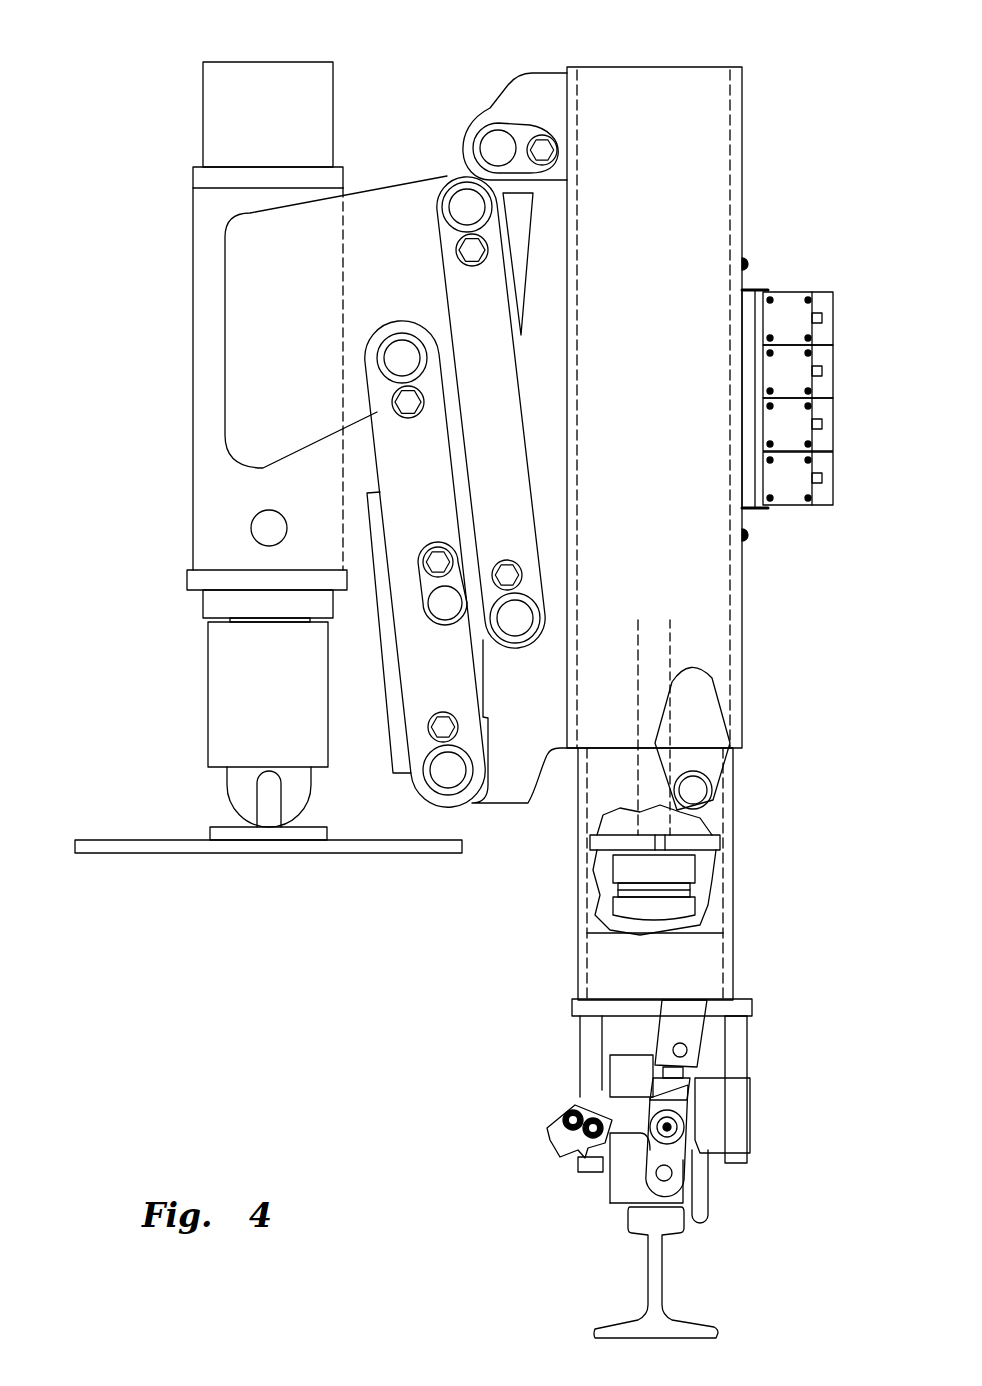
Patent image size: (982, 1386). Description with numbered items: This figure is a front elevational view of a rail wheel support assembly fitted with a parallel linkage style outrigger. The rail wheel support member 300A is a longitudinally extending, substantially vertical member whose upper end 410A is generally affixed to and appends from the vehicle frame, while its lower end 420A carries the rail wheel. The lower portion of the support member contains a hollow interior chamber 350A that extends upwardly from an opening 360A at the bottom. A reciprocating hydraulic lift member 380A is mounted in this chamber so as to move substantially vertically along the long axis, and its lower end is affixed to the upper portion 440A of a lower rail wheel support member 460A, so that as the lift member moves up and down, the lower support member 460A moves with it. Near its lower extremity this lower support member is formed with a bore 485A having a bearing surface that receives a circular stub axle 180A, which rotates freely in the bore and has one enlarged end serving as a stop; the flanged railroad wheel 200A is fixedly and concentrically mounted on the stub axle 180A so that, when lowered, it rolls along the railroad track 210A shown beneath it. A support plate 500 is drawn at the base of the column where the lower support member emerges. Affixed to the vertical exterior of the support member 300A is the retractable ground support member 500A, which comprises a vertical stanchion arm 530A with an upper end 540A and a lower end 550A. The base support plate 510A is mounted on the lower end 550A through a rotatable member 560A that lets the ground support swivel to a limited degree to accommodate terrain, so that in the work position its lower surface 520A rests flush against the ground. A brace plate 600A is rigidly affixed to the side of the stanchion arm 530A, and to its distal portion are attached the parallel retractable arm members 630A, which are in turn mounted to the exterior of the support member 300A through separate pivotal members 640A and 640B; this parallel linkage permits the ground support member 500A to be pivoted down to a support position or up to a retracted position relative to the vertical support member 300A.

The upper end 540A is at (203, 167).
The vertical stanchion arm 530A is at (213, 296).
The retractable ground support member 500A is at (190, 489).
The lower end 550A is at (232, 693).
The rotatable member 560A is at (267, 813).
The base support plate 510A is at (217, 842).
The lower surface 520A is at (93, 852).
The brace plate 600A is at (385, 213).
The pivotal member 640A is at (470, 248).
The retractable arm member 630A is at (490, 398).
The lower pivot bracket 640B is at (525, 640).
The rail wheel support member 300A is at (705, 595).
The hollow interior chamber 350A is at (680, 220).
The upper end 410A is at (745, 120).
The hydraulic lift member 380A is at (700, 843).
The opening 360A is at (612, 998).
The support leg 500 is at (750, 1008).
The upper portion 440A is at (733, 998).
The lower end 420A is at (735, 978).
The rail wheel support member 460A is at (750, 1058).
The stub axle 180A is at (750, 1125).
The bore 485A is at (548, 1122).
The flanged railroad wheel 200A is at (698, 1197).
The railroad track 210A is at (657, 1302).